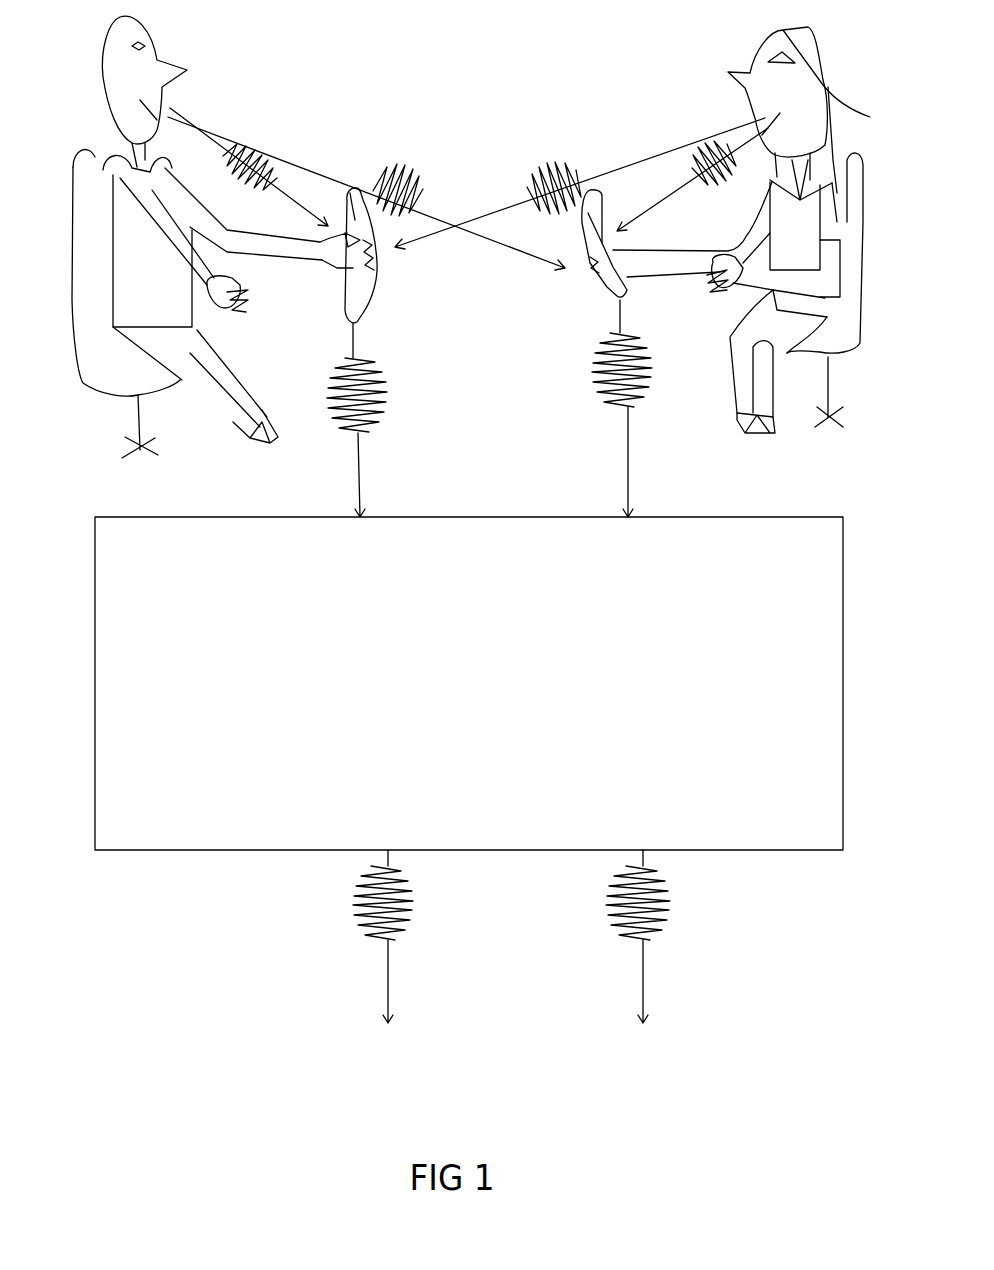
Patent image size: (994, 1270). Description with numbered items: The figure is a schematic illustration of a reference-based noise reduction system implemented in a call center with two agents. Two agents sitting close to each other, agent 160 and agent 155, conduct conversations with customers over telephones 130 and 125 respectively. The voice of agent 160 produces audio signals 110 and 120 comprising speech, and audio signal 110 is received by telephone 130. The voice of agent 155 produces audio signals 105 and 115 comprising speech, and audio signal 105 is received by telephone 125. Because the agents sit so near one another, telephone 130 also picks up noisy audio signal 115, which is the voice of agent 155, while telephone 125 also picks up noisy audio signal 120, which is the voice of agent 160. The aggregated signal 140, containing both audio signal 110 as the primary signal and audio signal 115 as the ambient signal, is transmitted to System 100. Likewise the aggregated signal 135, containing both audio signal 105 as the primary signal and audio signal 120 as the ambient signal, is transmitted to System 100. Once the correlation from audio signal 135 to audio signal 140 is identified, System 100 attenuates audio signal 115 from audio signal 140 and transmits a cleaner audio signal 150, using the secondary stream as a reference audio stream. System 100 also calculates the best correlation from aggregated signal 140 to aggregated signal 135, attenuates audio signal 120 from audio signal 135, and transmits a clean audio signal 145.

The system 100 is at (802, 517).
The audio signal 105 is at (698, 142).
The audio signal 110 is at (258, 146).
The noisy audio signal 115 is at (550, 158).
The noisy audio signal 120 is at (413, 163).
The telephone 125 is at (597, 290).
The telephone 130 is at (373, 300).
The aggregated signal 135 is at (597, 370).
The aggregated signal 140 is at (387, 397).
The clean audio signal 145 is at (667, 907).
The cleaner audio signal 150 is at (350, 898).
The agent 155 is at (840, 110).
The agent 160 is at (103, 75).